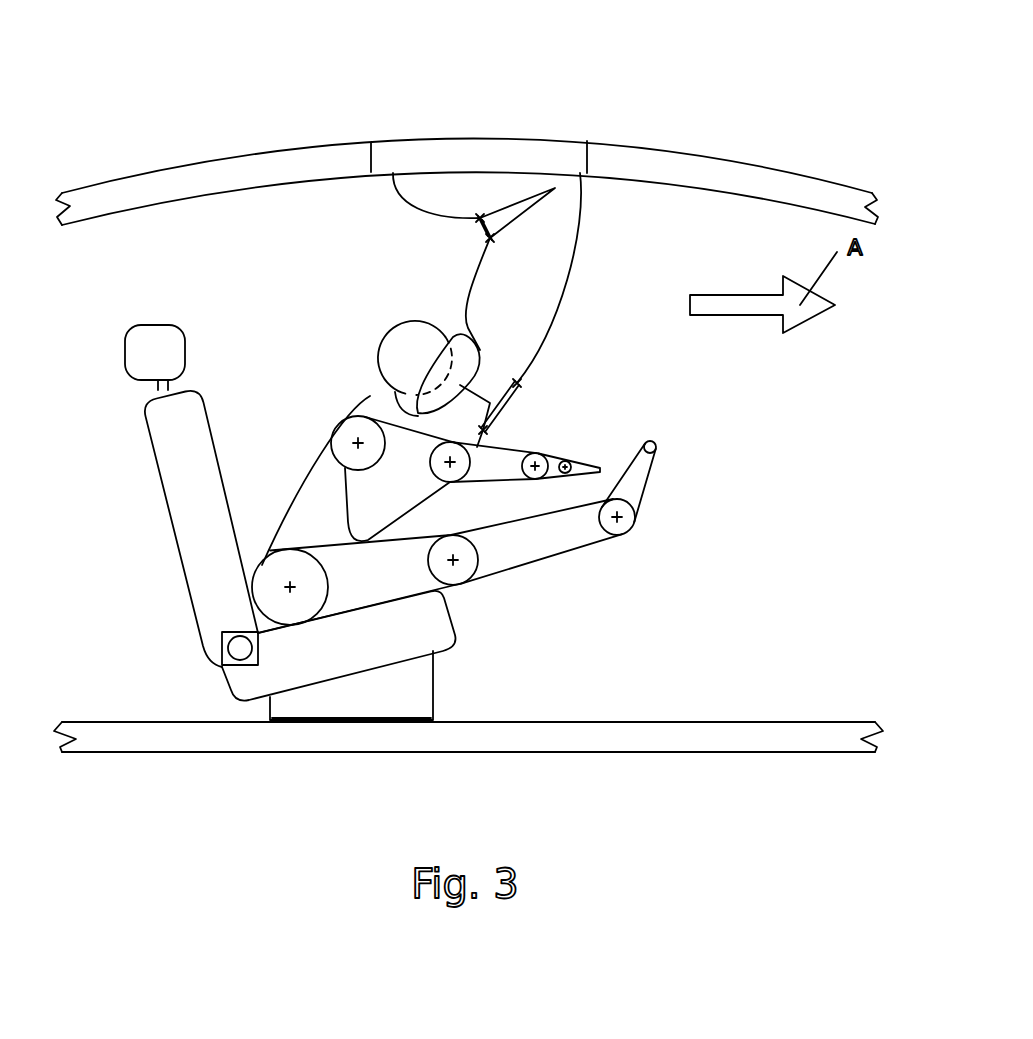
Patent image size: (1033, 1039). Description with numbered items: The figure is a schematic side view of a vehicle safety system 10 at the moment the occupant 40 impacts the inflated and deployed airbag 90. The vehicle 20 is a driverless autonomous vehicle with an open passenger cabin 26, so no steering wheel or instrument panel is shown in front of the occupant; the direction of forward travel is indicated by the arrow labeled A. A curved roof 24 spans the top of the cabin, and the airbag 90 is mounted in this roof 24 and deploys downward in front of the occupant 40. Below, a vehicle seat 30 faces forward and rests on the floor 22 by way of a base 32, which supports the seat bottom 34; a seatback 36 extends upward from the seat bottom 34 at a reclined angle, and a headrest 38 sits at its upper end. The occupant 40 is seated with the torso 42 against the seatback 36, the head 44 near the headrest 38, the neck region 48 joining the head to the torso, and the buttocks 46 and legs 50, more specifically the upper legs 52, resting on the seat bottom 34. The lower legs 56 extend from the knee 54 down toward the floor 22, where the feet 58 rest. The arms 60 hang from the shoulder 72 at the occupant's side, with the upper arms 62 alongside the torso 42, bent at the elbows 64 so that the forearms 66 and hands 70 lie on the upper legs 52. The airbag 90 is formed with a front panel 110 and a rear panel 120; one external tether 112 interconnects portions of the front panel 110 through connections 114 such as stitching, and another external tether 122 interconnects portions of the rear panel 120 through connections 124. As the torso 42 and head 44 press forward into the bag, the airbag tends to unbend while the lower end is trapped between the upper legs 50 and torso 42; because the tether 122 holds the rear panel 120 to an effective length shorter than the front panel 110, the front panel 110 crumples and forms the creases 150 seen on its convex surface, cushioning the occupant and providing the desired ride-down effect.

The vehicle safety system 10 is at (535, 125).
The vehicle 20 is at (467, 127).
The floor 22 is at (453, 728).
The roof 24 is at (635, 162).
The passenger cabin 26 is at (680, 240).
The vehicle seat 30 is at (248, 562).
The base 32 is at (390, 700).
The seat bottom 34 is at (348, 660).
The seatback 36 is at (205, 524).
The headrest 38 is at (137, 357).
The occupant 40 is at (280, 366).
The torso 42 is at (363, 475).
The head 44 is at (408, 333).
The buttocks 46 is at (273, 596).
The neck 48 is at (412, 397).
The legs 50 is at (373, 582).
The upper legs 52 is at (347, 592).
The knee 54 is at (458, 572).
The lower legs 56 is at (530, 543).
The feet 58 is at (637, 484).
The arms 60 is at (374, 479).
The upper arms 62 is at (403, 457).
The elbows 64 is at (450, 473).
The forearms 66 is at (497, 460).
The hands 70 is at (575, 468).
The shoulder 72 is at (343, 456).
The airbag 90 is at (500, 311).
The front panel 110 is at (467, 300).
The external tether 112 is at (480, 222).
The connections 114 is at (479, 216).
The rear panel 120 is at (548, 327).
The external tether 122 is at (547, 413).
The connections 124 is at (522, 385).
The creases 150 is at (473, 338).